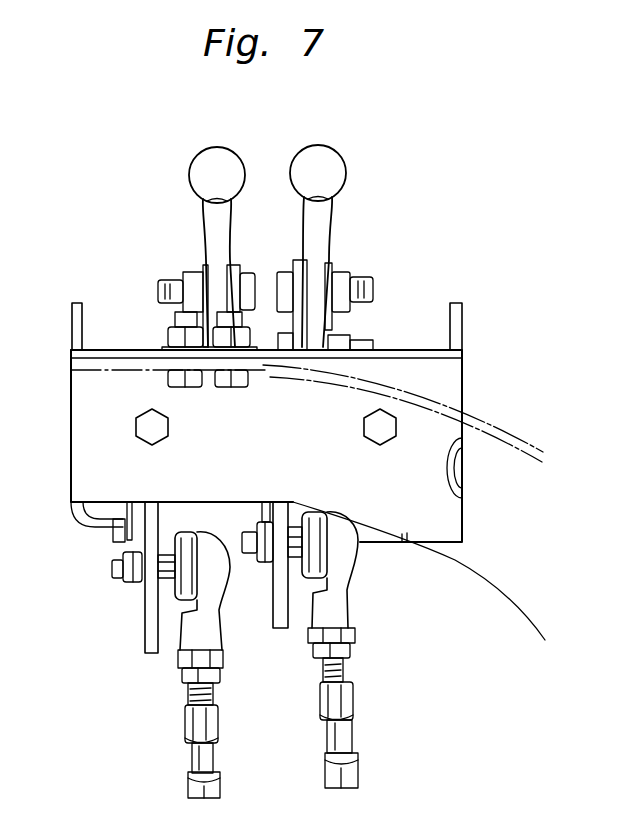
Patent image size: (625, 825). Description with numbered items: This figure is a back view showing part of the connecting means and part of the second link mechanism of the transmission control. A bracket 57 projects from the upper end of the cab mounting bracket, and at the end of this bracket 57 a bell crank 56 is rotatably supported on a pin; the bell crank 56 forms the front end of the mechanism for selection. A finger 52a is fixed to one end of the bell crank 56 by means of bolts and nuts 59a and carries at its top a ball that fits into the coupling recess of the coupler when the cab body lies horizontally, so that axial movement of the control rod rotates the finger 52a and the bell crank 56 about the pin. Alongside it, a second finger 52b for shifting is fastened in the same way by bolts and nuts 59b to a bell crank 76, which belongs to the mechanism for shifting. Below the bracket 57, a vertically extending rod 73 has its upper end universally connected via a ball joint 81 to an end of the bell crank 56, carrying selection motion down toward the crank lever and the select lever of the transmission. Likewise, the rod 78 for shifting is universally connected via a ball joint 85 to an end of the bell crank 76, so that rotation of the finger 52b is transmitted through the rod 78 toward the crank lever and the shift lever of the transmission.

The finger 52a is at (200, 165).
The finger for shifting 52b is at (330, 153).
The bell crank 56 is at (122, 525).
The bracket 57 is at (71, 327).
The bolts and nuts 59a is at (167, 282).
The bolts and nuts 59b is at (362, 278).
The rod 73 is at (190, 783).
The bell crank 76 is at (278, 628).
The rod for shifting 78 is at (358, 758).
The ball joint 81 is at (218, 585).
The ball joint 85 is at (348, 560).